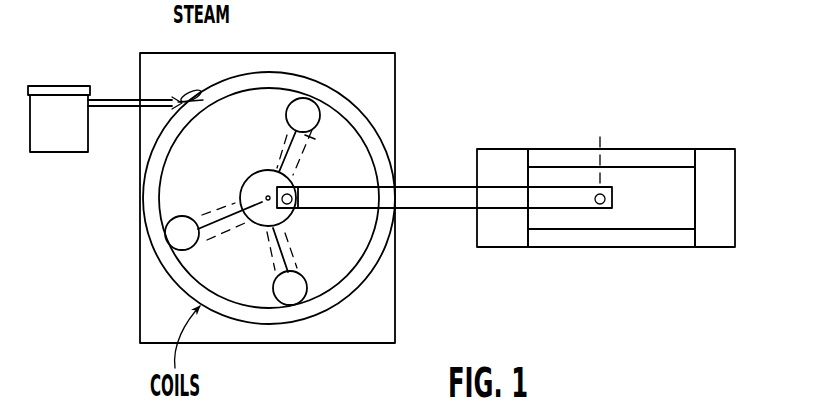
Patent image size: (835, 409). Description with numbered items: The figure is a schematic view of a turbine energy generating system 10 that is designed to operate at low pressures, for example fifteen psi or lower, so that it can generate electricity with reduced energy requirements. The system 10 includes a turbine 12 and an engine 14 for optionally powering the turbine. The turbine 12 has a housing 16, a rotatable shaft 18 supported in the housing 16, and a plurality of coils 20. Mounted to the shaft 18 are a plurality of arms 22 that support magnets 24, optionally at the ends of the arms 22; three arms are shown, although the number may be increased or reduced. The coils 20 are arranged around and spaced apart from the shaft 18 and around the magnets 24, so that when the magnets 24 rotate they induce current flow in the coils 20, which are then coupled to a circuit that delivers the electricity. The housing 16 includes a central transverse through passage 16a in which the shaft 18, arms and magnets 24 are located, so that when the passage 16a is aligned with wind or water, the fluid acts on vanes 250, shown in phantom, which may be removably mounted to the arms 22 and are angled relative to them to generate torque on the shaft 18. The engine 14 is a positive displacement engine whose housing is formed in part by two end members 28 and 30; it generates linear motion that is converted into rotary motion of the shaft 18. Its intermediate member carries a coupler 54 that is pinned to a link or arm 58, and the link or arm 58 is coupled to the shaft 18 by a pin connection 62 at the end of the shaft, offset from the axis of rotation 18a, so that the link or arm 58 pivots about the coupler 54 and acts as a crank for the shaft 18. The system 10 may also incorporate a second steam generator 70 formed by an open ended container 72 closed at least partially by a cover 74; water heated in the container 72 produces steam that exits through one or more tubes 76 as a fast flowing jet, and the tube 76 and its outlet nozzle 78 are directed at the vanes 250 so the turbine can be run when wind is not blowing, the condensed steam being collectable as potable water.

The turbine energy generating system 10 is at (563, 99).
The turbine 12 is at (413, 272).
The engine 14 is at (666, 148).
The housing 16 is at (384, 62).
The central transverse through passage 16a is at (338, 152).
The rotatable shaft 18 is at (274, 170).
The axis of rotation 18a is at (266, 195).
The coils 20 is at (173, 273).
The arms 22 is at (222, 225).
The magnets 24 is at (165, 240).
The end member 28 is at (507, 148).
The end member 30 is at (738, 148).
The coupler 54 is at (600, 206).
The link or arm 58 is at (415, 187).
The pin connection 62 is at (297, 208).
The steam generator 70 is at (52, 112).
The container 72 is at (31, 108).
The cover 74 is at (52, 86).
The tube 76 is at (128, 100).
The nozzle 78 is at (172, 108).
The vanes 250 is at (308, 148).